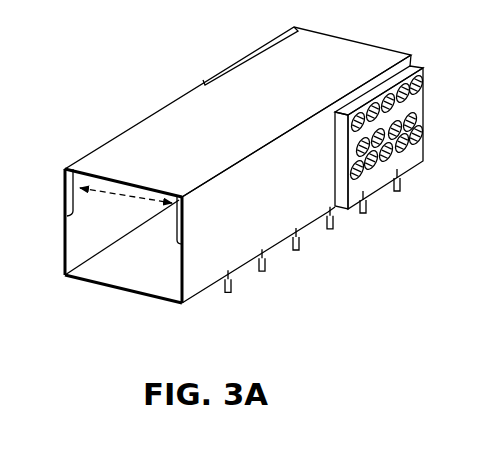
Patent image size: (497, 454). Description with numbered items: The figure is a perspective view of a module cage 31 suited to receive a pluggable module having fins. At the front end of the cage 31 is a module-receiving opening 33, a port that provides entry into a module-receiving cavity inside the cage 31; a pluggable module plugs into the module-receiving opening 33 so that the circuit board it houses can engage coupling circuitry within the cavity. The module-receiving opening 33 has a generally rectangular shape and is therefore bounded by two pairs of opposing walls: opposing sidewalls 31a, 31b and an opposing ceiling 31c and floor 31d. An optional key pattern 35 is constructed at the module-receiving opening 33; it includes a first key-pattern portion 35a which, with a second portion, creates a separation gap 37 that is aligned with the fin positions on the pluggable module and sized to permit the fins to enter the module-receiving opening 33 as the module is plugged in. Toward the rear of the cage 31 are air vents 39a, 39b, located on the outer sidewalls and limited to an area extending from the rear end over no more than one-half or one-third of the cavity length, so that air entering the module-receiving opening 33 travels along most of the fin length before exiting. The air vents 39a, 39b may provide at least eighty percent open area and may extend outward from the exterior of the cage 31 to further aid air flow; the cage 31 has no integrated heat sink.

The cage 31 is at (210, 184).
The sidewall 31a is at (83, 241).
The sidewall 31b is at (168, 262).
The ceiling 31c is at (115, 181).
The floor 31d is at (148, 290).
The module-receiving opening 33 is at (58, 343).
The key pattern 35 is at (171, 208).
The first key-pattern portion 35a is at (71, 194).
The separation gap 37 is at (143, 199).
The air vent 39a is at (249, 52).
The air vent 39b is at (375, 195).